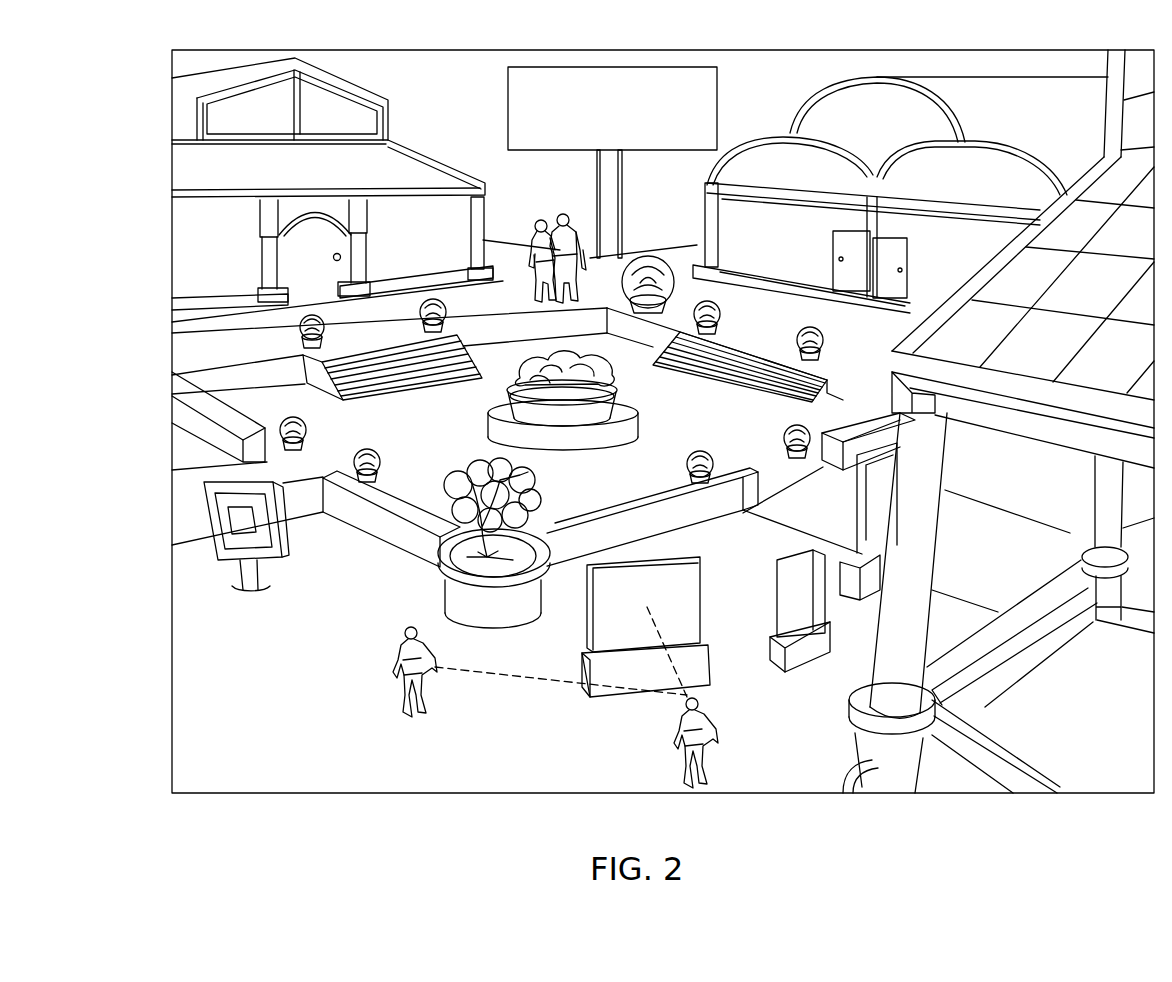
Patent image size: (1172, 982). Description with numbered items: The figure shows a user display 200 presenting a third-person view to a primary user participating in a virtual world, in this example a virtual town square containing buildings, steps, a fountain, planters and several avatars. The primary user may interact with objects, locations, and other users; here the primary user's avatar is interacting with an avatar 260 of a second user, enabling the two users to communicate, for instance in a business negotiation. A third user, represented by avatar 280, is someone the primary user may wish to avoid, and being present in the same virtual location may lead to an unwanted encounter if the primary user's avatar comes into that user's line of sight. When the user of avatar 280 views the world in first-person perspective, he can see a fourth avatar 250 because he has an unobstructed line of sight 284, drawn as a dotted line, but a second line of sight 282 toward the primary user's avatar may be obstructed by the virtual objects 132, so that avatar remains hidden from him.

The user display 200 is at (120, 133).
The avatar of a second user 260 is at (578, 216).
The virtual objects 132 is at (642, 558).
The second line of sight 282 is at (660, 637).
The avatar of a third user 280 is at (712, 748).
The line of sight 284 is at (515, 677).
The fourth avatar 250 is at (340, 683).